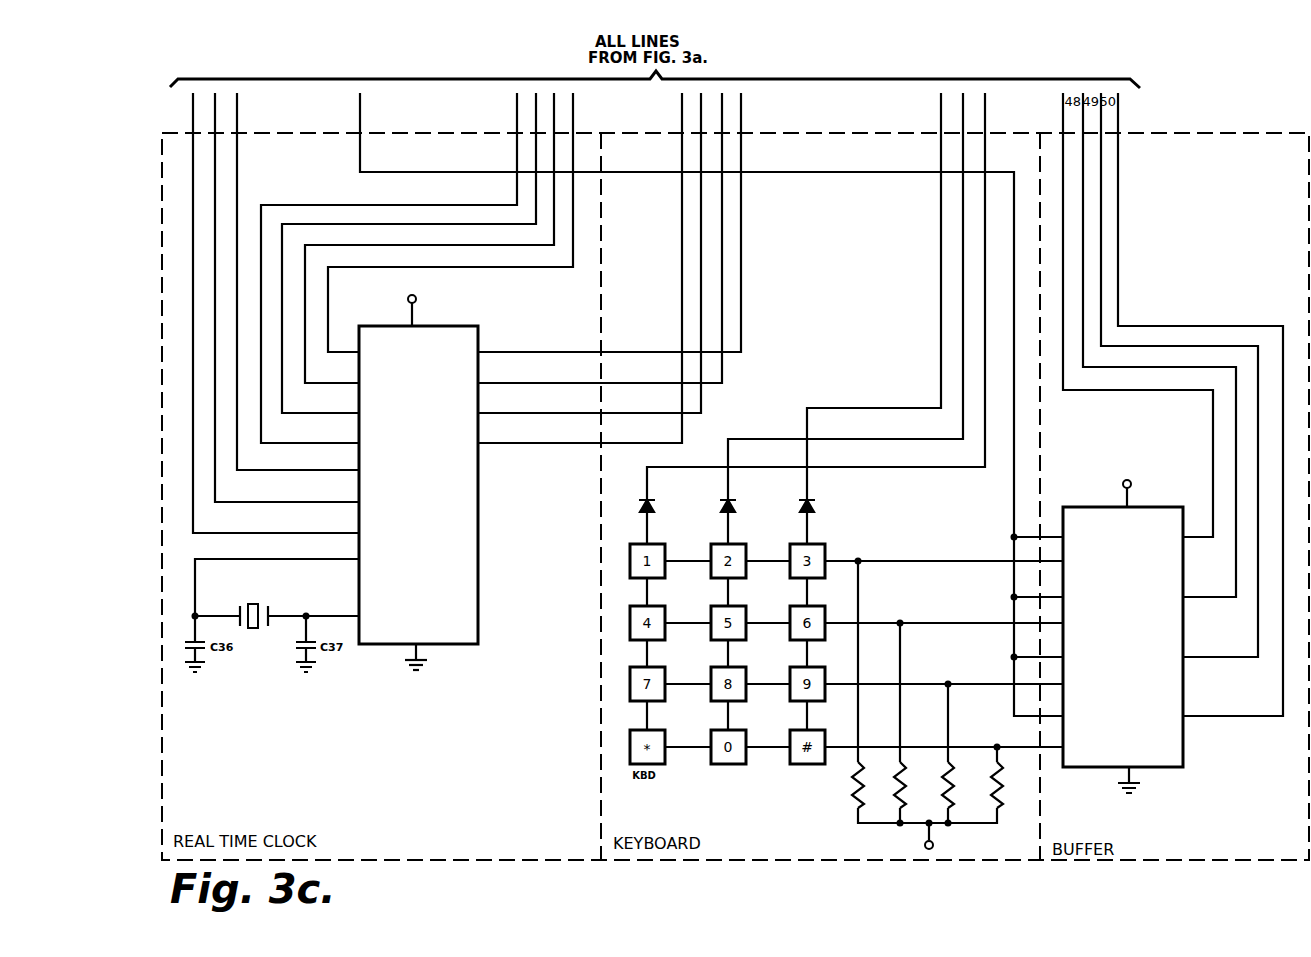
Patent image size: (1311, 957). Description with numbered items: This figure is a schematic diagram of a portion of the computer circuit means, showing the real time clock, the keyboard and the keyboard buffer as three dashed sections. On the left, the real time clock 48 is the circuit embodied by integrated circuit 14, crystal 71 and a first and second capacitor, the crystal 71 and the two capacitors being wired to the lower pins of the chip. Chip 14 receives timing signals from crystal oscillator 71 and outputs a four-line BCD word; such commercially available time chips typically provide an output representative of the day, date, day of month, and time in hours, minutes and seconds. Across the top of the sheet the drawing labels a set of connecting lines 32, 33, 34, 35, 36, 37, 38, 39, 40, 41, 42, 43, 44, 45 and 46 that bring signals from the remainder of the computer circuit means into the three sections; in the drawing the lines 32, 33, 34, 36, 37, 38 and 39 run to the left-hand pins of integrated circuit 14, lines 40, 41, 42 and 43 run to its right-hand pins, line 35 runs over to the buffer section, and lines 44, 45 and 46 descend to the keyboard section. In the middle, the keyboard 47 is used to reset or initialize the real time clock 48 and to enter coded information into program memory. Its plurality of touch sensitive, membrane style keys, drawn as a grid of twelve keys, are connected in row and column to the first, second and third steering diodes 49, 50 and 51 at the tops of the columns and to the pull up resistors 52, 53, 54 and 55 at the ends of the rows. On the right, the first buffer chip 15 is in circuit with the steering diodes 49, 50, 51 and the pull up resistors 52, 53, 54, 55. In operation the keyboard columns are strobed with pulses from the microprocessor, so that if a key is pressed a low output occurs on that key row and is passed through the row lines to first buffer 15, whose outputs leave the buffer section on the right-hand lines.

The integrated circuit 14 is at (445, 333).
The first buffer chip 15 is at (1153, 512).
The line from FIG. 3a 32 is at (266, 313).
The line from FIG. 3a 33 is at (277, 297).
The line from FIG. 3a 34 is at (288, 281).
The line from FIG. 3a 35 is at (701, 404).
The line from FIG. 3a 36 is at (389, 268).
The line from FIG. 3a 37 is at (409, 253).
The line from FIG. 3a 38 is at (429, 238).
The line from FIG. 3a 39 is at (450, 222).
The line from FIG. 3a 40 is at (580, 268).
The line from FIG. 3a 41 is at (589, 253).
The line from FIG. 3a 42 is at (600, 238).
The line from FIG. 3a 43 is at (609, 222).
The line from FIG. 3a 44 is at (874, 296).
The line from FIG. 3a 45 is at (845, 296).
The line from FIG. 3a 46 is at (816, 296).
The keyboard 47 is at (1128, 315).
The real time clock 48 is at (482, 654).
The first steering diode 49 is at (650, 500).
The second steering diode 50 is at (731, 500).
The third steering diode 51 is at (810, 500).
The pull up resistor 52 is at (854, 766).
The pull up resistor 53 is at (897, 806).
The pull up resistor 54 is at (951, 810).
The pull up resistor 55 is at (1003, 800).
The crystal 71 is at (268, 606).